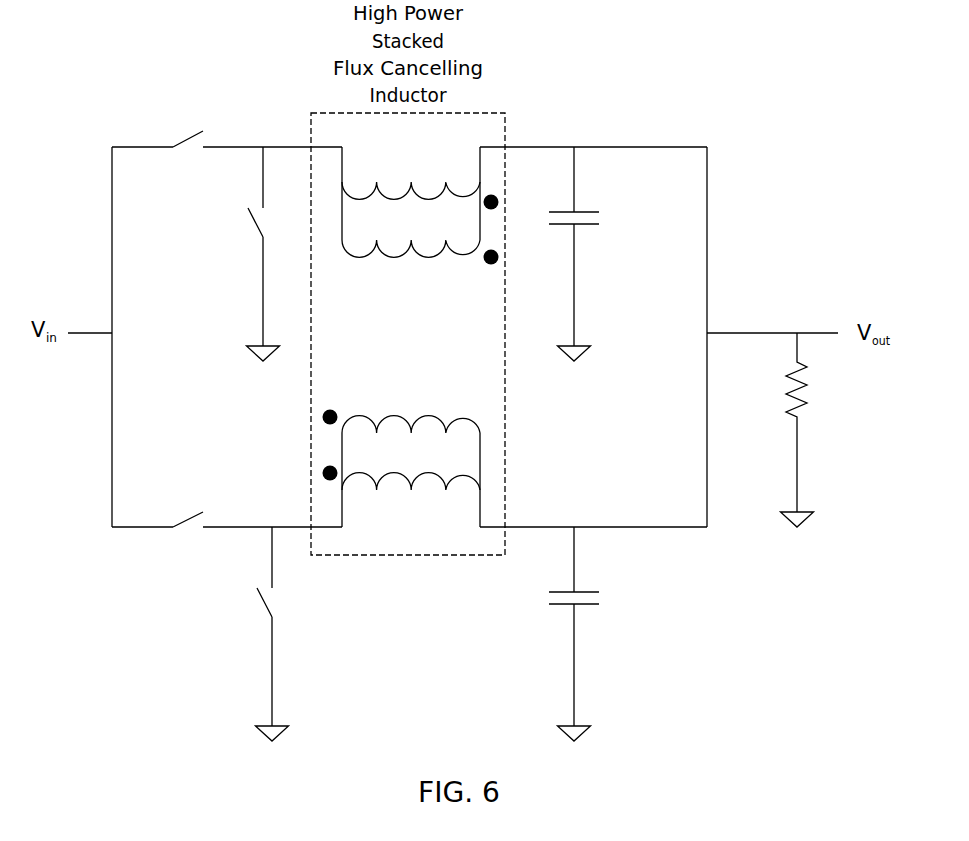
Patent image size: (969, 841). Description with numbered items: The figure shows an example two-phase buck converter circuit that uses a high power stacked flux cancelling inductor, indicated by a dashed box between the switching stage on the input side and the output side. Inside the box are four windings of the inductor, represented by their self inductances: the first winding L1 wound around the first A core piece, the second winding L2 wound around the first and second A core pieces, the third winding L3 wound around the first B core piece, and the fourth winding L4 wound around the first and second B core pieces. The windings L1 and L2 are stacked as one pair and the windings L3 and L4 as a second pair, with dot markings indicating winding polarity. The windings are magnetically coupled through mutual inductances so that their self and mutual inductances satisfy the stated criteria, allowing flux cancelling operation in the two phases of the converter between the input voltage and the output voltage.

The self inductance of first Winding L1 is at (420, 205).
The self inductance of second Winding L2 is at (420, 265).
The self inductance of third Winding L3 is at (402, 413).
The self inductance of fourth Winding L4 is at (402, 471).